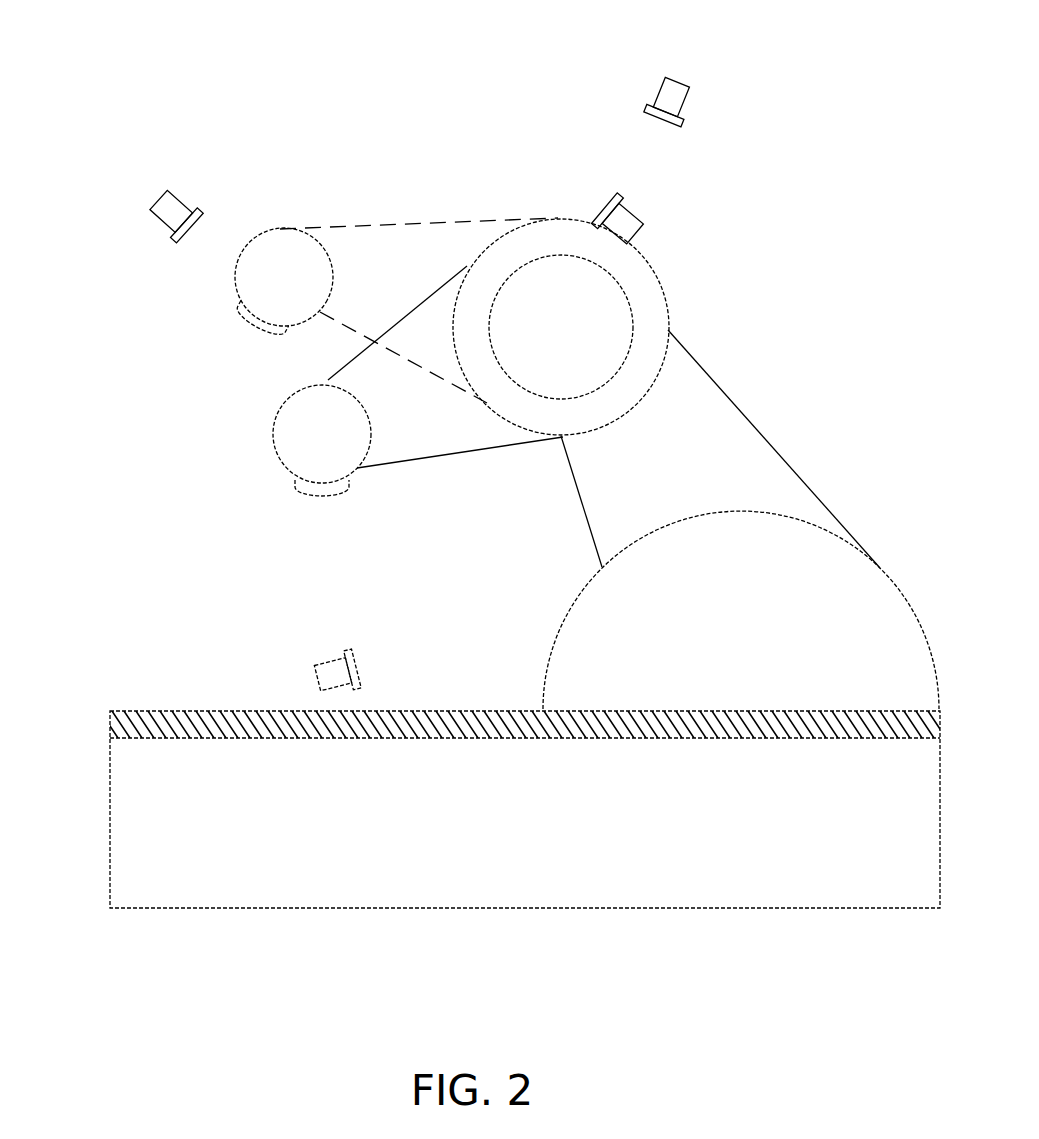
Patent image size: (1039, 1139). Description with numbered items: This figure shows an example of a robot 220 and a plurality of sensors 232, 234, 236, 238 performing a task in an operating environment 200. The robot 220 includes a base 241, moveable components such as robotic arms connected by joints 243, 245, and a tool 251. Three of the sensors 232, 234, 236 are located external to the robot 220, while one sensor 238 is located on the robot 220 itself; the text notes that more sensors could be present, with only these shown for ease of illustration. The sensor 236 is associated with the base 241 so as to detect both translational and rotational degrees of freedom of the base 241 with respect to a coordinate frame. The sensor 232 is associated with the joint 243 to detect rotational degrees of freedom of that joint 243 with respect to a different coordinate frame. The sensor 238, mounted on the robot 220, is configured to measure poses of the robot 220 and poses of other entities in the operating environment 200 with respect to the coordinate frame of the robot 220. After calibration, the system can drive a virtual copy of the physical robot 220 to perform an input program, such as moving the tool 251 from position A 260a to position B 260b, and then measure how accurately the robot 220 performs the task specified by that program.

The operating environment 200 is at (191, 91).
The robot 220 is at (505, 136).
The sensor 232 is at (160, 194).
The sensor 234 is at (683, 107).
The sensor 236 is at (317, 672).
The sensor 238 is at (637, 230).
The base 241 is at (741, 610).
The joint 243 is at (322, 434).
The joint 245 is at (561, 327).
The tool 251 is at (322, 495).
The position A 260a is at (274, 462).
The position B 260b is at (218, 292).